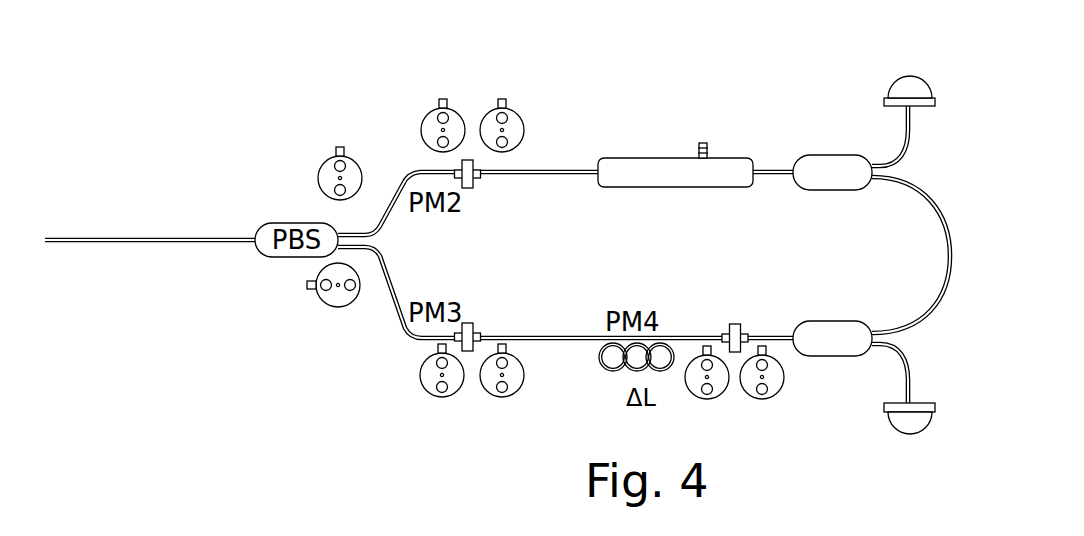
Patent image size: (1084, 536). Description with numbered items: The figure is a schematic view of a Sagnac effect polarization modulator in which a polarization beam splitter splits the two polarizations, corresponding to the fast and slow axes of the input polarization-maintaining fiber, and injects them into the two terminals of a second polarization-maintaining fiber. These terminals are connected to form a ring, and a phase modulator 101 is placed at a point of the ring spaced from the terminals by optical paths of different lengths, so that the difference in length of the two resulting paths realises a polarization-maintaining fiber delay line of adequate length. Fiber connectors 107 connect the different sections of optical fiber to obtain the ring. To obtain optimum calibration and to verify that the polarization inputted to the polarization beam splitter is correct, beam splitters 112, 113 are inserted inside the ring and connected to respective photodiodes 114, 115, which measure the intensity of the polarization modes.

The phase modulator 101 is at (675, 158).
The fiber connectors 107 is at (467, 160).
The beam splitter 112 is at (812, 155).
The beam splitter 113 is at (838, 356).
The photodiode 114 is at (900, 83).
The photodiode 115 is at (903, 428).